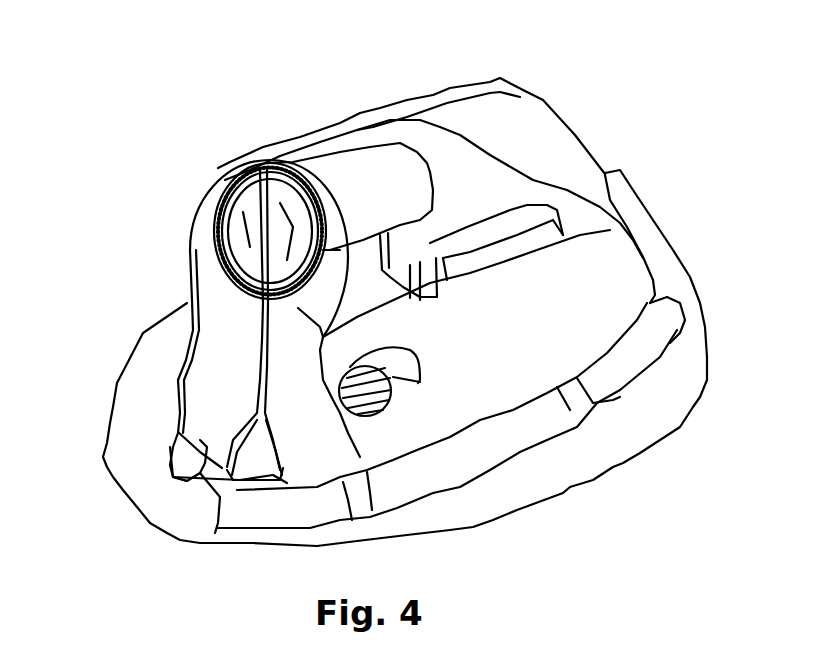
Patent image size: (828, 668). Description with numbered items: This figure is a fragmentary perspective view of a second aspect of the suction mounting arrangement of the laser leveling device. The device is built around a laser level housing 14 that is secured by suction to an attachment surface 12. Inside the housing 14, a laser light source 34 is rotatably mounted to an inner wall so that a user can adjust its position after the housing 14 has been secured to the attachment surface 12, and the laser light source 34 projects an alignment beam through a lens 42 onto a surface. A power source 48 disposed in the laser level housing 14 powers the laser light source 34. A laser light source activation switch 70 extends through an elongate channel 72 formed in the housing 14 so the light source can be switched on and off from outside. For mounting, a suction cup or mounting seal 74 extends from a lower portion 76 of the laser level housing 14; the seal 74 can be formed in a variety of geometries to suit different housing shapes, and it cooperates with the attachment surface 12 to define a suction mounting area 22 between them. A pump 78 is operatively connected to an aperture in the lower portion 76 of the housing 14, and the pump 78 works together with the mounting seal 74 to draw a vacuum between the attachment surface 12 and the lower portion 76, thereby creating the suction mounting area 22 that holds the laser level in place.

The attachment surface 12 is at (341, 340).
The laser level housing 14 is at (436, 177).
The suction mounting area 22 is at (405, 358).
The laser light source 34 is at (327, 132).
The lens 42 is at (218, 175).
The power source 48 is at (487, 223).
The laser light source activation switch 70 is at (436, 446).
The elongate channel 72 is at (492, 456).
The suction cup or mounting seal 74 is at (177, 484).
The lower portion 76 is at (144, 434).
The pump 78 is at (174, 325).